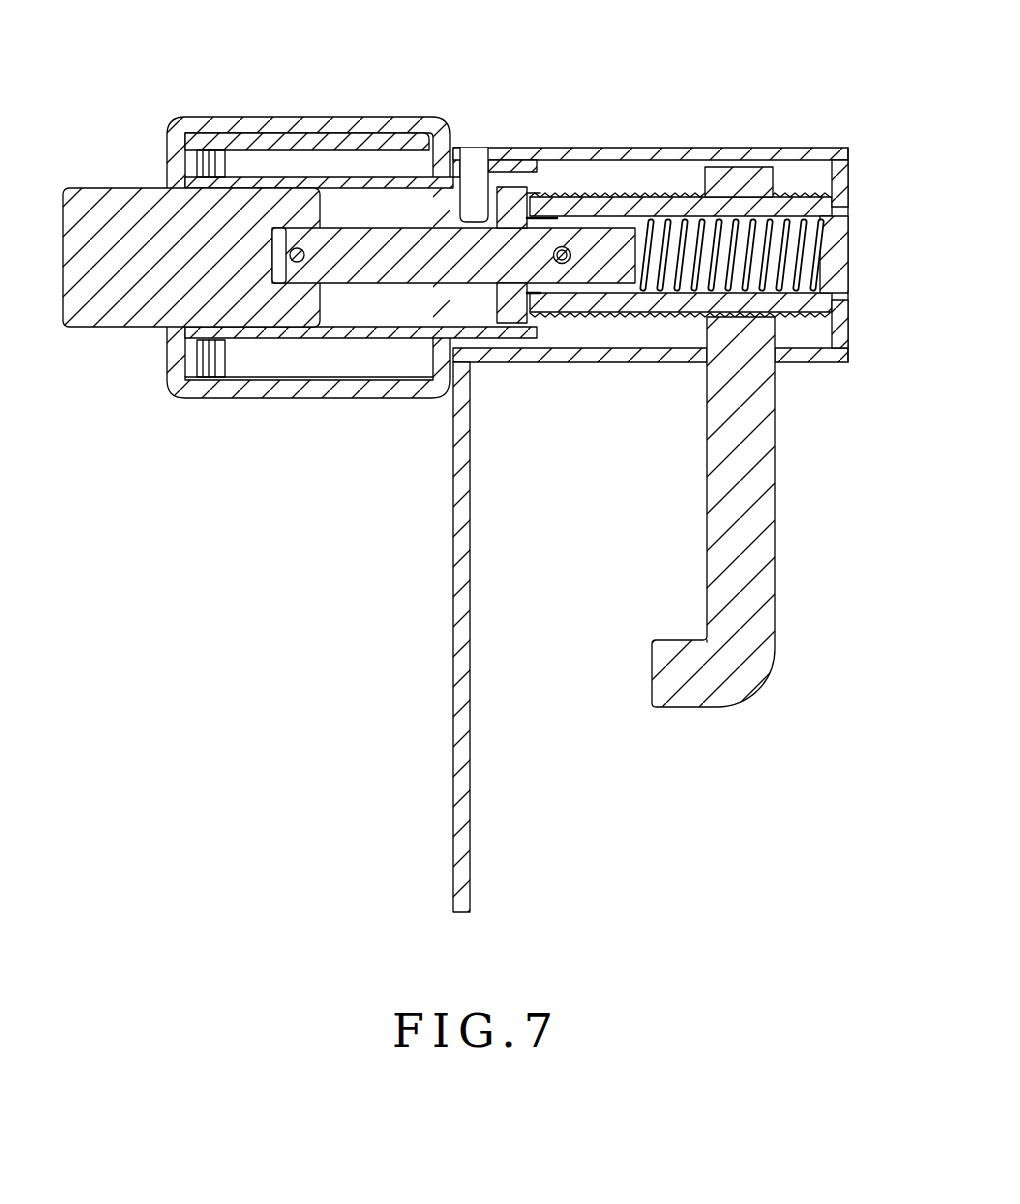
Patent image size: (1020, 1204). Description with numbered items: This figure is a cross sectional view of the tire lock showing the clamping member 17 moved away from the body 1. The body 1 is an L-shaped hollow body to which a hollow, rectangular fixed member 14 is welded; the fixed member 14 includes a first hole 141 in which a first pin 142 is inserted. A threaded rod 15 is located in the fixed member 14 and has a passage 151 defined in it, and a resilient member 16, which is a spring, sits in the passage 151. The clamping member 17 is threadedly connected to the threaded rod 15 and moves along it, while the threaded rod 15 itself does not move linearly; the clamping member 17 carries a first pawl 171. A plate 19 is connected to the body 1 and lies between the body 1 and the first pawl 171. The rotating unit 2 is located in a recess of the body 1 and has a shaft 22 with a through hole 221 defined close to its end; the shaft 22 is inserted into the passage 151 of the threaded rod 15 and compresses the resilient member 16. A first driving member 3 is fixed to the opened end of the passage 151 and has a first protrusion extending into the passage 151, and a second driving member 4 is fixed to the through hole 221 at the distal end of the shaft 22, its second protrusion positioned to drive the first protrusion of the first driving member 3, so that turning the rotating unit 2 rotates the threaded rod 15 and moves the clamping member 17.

The body 1 is at (240, 388).
The rotating unit 2 is at (90, 212).
The shaft 22 is at (348, 253).
The through hole 221 is at (562, 264).
The first driving member 3 is at (513, 320).
The second driving member 4 is at (568, 246).
The fixed member 14 is at (612, 355).
The first hole 141 is at (496, 148).
The first pin 142 is at (472, 168).
The threaded rod 15 is at (813, 307).
The passage 151 is at (707, 287).
The resilient member 16 is at (783, 220).
The clamping member 17 is at (763, 572).
The first pawl 171 is at (665, 700).
The plate 19 is at (467, 840).